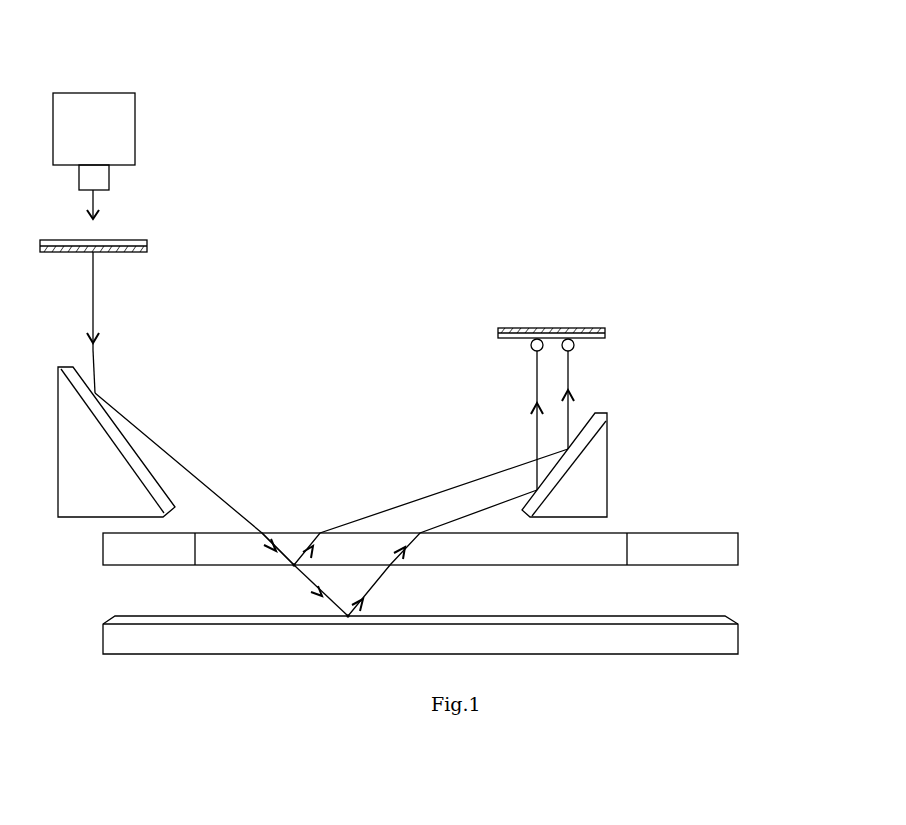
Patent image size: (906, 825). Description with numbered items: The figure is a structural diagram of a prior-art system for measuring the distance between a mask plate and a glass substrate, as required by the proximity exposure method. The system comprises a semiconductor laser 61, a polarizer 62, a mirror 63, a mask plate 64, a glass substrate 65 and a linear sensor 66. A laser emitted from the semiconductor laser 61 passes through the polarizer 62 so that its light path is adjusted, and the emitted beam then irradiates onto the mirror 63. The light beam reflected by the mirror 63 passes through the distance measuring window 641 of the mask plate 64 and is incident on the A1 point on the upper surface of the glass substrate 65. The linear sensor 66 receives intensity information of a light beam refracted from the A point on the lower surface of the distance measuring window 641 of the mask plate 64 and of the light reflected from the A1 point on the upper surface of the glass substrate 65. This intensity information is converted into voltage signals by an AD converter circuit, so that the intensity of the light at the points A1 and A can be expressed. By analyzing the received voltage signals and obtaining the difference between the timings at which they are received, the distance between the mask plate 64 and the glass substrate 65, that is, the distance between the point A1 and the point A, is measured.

The semiconductor laser 61 is at (85, 100).
The polarizer 62 is at (112, 240).
The mirror 63 is at (93, 423).
The mask plate 64 is at (738, 543).
The distance measuring window 641 is at (242, 547).
The glass substrate 65 is at (743, 640).
The linear sensor 66 is at (518, 328).
The A point A is at (289, 579).
The A1 point A1 is at (353, 632).